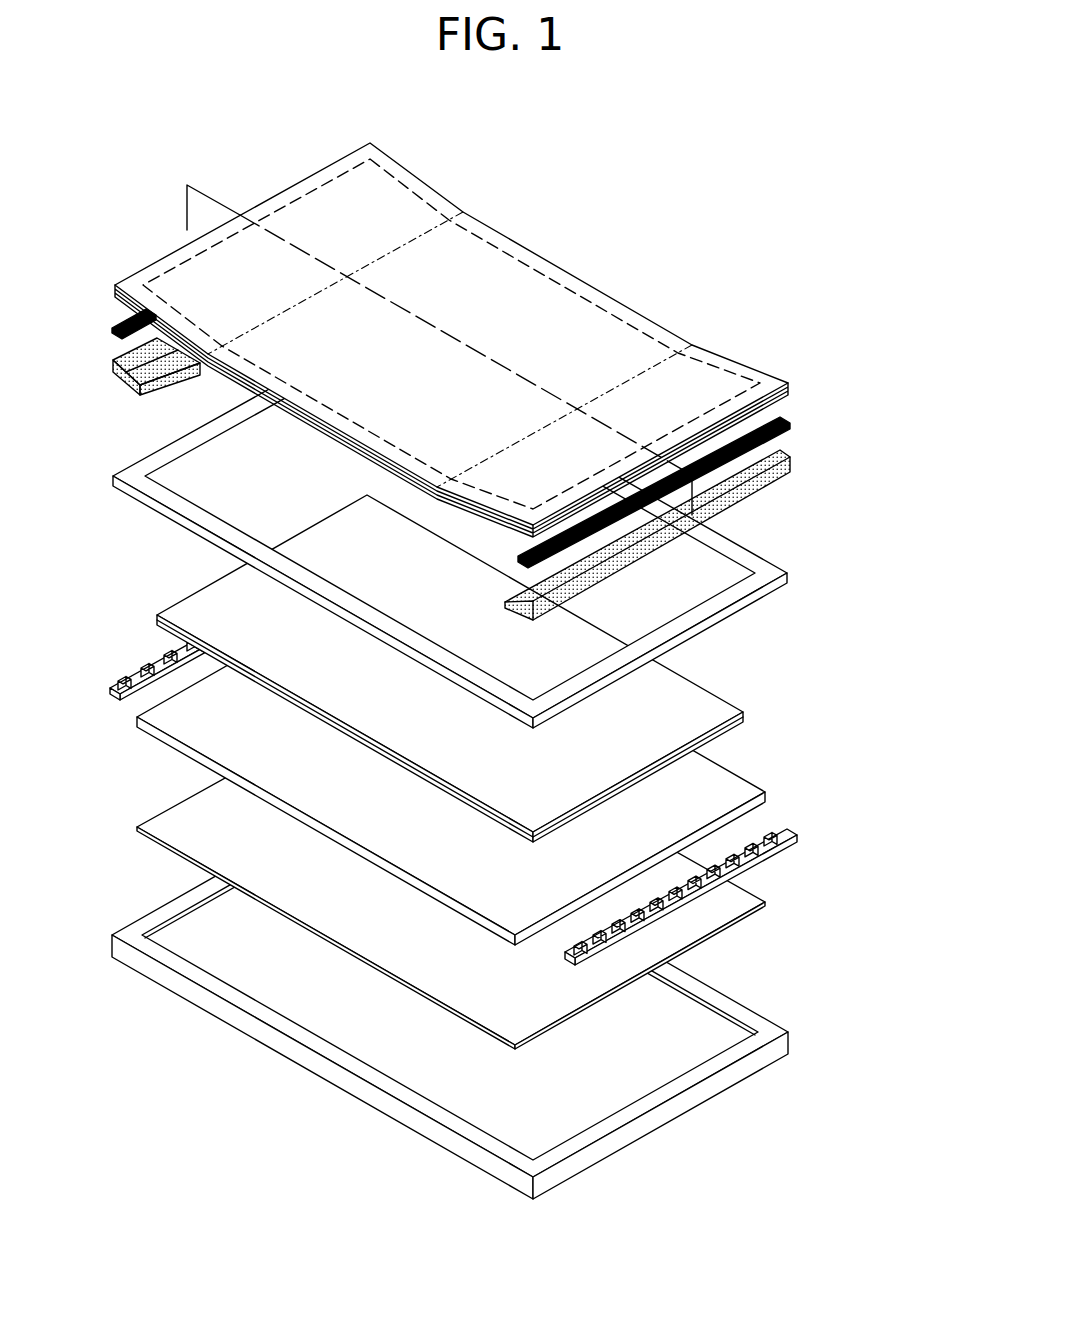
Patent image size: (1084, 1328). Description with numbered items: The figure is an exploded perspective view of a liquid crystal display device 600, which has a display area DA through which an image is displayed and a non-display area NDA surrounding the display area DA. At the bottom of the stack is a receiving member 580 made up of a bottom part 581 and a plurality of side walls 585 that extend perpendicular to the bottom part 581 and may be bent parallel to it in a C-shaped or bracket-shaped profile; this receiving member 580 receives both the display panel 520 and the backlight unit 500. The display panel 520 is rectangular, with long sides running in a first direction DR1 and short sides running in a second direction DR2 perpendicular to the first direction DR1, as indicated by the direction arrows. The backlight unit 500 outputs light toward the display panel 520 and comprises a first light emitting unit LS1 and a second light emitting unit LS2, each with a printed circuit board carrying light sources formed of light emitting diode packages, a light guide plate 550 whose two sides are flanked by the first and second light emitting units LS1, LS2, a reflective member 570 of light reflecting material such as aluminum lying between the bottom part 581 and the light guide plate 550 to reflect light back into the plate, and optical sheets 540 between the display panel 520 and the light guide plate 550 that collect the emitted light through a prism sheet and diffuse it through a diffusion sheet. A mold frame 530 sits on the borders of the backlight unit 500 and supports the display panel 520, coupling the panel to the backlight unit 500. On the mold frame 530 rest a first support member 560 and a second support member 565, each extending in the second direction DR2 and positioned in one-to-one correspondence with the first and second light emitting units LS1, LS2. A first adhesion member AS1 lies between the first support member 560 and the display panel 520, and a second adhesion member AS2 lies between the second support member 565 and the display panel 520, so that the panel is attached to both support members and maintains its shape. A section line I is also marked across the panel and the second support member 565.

The display device 600 is at (658, 198).
The backlight unit 500 is at (883, 672).
The display panel 520 is at (502, 350).
The mold frame 530 is at (796, 575).
The optical sheets 540 is at (700, 693).
The light guide plate 550 is at (718, 778).
The first support member 560 is at (165, 378).
The second support member 565 is at (790, 462).
The reflective member 570 is at (752, 897).
The receiving member 580 is at (500, 994).
The bottom part 581 is at (412, 1018).
The side walls 585 is at (650, 1125).
The first adhesion member AS1 is at (122, 320).
The second adhesion member AS2 is at (762, 453).
The display area DA is at (542, 270).
The non-display area NDA is at (620, 312).
The first light emitting unit LS1 is at (135, 719).
The second light emitting unit LS2 is at (726, 917).
The section line I- I is at (182, 231).
The first direction DR1 is at (840, 1188).
The second direction DR2 is at (840, 1188).